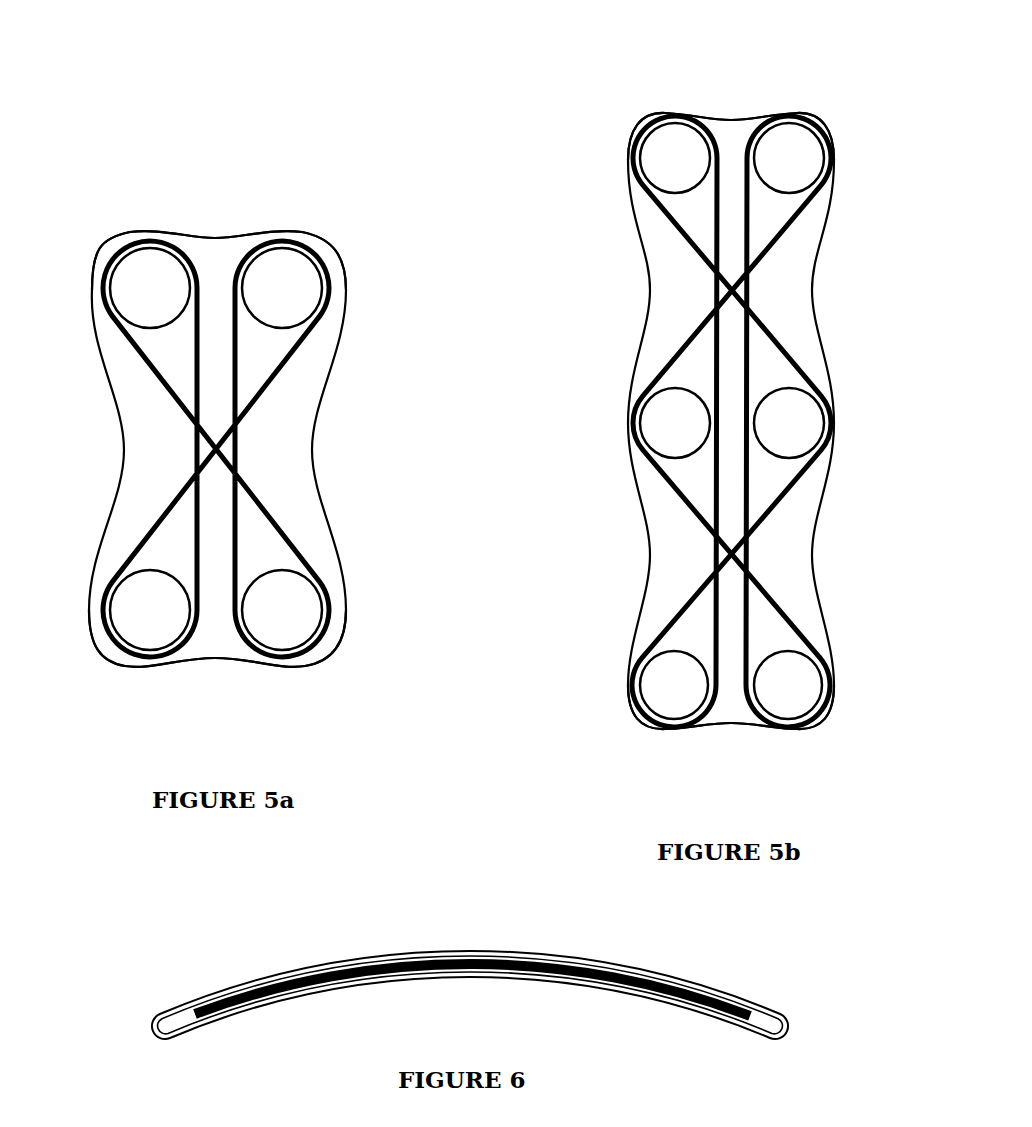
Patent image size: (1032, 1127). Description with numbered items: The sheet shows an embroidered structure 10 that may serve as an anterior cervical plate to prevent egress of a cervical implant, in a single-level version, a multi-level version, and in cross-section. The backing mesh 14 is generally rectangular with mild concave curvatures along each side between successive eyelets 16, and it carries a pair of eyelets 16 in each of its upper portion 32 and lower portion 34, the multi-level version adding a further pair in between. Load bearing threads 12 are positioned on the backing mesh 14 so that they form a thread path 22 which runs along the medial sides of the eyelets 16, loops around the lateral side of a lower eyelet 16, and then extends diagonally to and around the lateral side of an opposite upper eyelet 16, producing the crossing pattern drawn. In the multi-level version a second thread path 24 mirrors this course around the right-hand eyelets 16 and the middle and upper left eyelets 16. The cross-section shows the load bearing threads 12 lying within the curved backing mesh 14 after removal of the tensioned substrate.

In FIG. 5A, the embroidered structure 10 is at (216, 457).
In FIG. 5B, the embroidered structure 10 is at (732, 423).
In FIG. 6, the embroidered structure 10 is at (458, 968).
In FIG. 6, the load bearing threads 12 is at (645, 985).
In FIG. 5A, the backing mesh 14 is at (312, 495).
In FIG. 5B, the backing mesh 14 is at (822, 572).
In FIG. 6, the backing mesh 14 is at (232, 981).
In FIG. 5A, the eyelets 16 is at (131, 289).
In FIG. 5B, the eyelets 16 is at (665, 155).
In FIG. 5A, the thread path 22 is at (167, 385).
In FIG. 5B, the thread path 22 is at (688, 345).
In FIG. 5B, the second thread path 24 is at (640, 178).
In FIG. 5A, the upper portion 32 is at (222, 224).
In FIG. 5B, the upper portion 32 is at (734, 106).
In FIG. 5A, the lower portion 34 is at (225, 680).
In FIG. 5B, the lower portion 34 is at (726, 735).